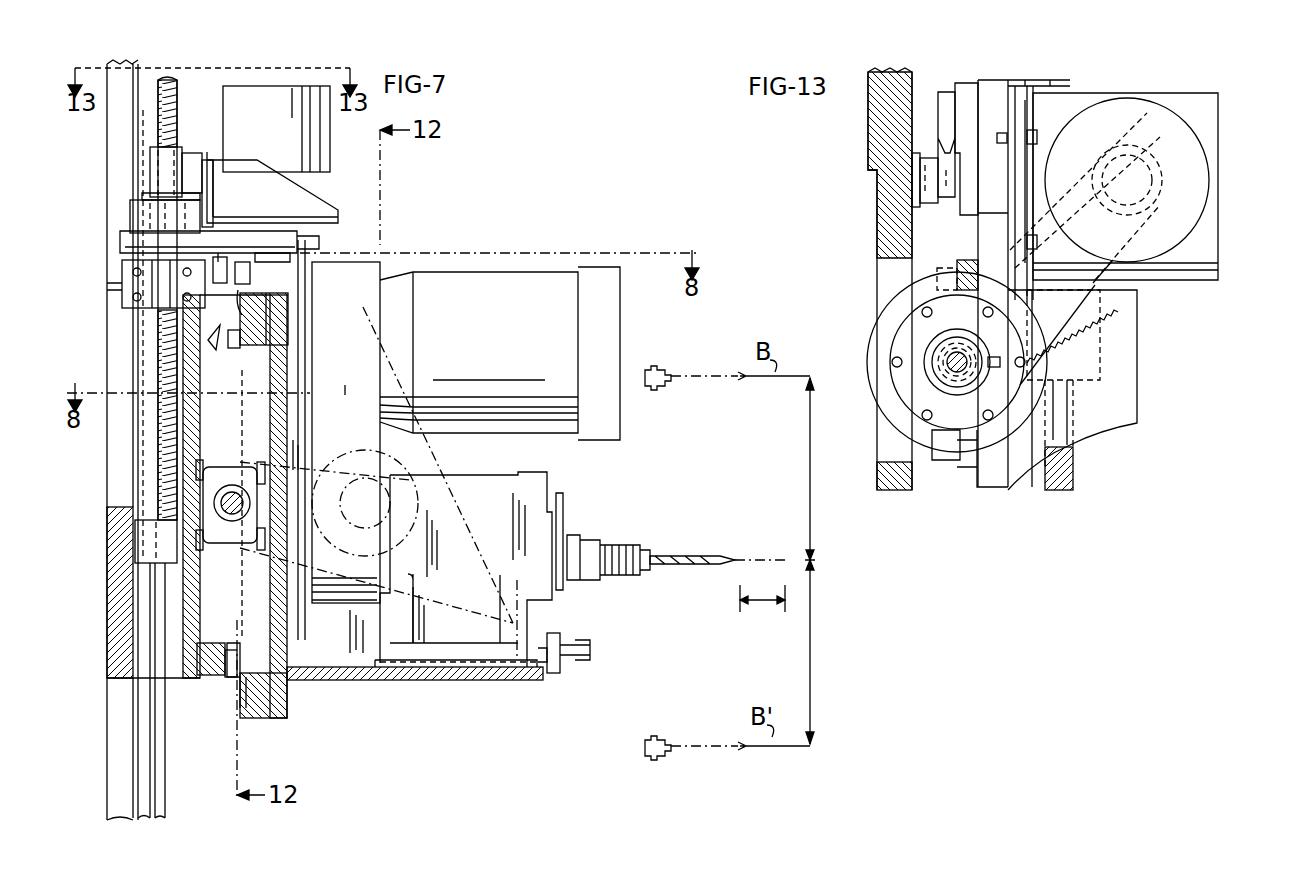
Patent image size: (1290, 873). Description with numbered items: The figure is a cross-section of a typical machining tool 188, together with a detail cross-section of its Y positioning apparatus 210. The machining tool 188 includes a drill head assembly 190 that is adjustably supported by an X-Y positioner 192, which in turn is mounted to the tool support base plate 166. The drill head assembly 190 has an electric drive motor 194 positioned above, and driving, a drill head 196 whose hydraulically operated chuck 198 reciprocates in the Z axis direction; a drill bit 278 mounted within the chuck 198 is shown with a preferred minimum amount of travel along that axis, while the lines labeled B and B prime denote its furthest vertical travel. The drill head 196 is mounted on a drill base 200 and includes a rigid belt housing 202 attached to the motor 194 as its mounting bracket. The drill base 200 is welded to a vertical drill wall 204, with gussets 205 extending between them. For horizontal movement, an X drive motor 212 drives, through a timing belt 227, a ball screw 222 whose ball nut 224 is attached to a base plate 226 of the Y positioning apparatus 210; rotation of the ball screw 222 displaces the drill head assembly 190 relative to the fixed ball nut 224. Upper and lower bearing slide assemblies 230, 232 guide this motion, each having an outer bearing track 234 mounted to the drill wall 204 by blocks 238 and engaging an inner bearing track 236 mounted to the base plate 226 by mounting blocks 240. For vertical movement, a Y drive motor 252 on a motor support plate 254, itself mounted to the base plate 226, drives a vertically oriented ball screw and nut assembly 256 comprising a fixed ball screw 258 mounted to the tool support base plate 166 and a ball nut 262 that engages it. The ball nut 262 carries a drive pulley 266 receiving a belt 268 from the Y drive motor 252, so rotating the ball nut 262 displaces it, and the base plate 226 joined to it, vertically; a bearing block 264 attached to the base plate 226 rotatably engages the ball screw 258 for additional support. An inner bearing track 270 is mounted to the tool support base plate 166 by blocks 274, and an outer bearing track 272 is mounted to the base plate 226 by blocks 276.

In FIG. 7, the tool support base plate 166 is at (122, 150).
In FIG. 13, the tool support base plate 166 is at (878, 198).
In FIG. 7, the machining tool 188 is at (490, 155).
In FIG. 7, the drill head assembly 190 is at (645, 333).
In FIG. 7, the X-Y positioner 192 is at (186, 680).
In FIG. 7, the electric drive motor 194 is at (517, 331).
In FIG. 7, the drill head 196 is at (487, 557).
In FIG. 7, the hydraulically operated chuck 198 is at (591, 542).
In FIG. 7, the drill base 200 is at (508, 674).
In FIG. 7, the belt housing 202 is at (361, 388).
In FIG. 7, the drill wall 204 is at (273, 709).
In FIG. 7, the gussets 205 is at (450, 469).
In FIG. 7, the Y positioning apparatus 210 is at (182, 106).
In FIG. 7, the X drive motor 212 is at (348, 401).
In FIG. 7, the ball screw 222 is at (232, 510).
In FIG. 13, the ball screw 222 is at (1075, 462).
In FIG. 7, the ball nut 224 is at (243, 455).
In FIG. 13, the ball nut 224 is at (1100, 340).
In FIG. 7, the base plate 226 is at (185, 358).
In FIG. 13, the base plate 226 is at (998, 86).
In FIG. 7, the timing belt 227 is at (360, 459).
In FIG. 7, the upper bearing slide assembly 230 is at (253, 275).
In FIG. 7, the lower bearing slide assembly 232 is at (250, 660).
In FIG. 7, the outer bearing track 234 is at (234, 307).
In FIG. 13, the outer bearing track 234 is at (1062, 415).
In FIG. 7, the inner bearing track 236 is at (235, 342).
In FIG. 7, the blocks 238 is at (275, 297).
In FIG. 7, the mounting blocks 240 is at (275, 404).
In FIG. 7, the Y drive motor 252 is at (275, 134).
In FIG. 13, the Y drive motor 252 is at (1200, 180).
In FIG. 7, the motor support plate 254 is at (340, 216).
In FIG. 13, the motor support plate 254 is at (1205, 116).
In FIG. 13, the ball screw and nut assembly 256 is at (860, 323).
In FIG. 7, the ball screw 258 is at (148, 136).
In FIG. 13, the ball screw 258 is at (945, 360).
In FIG. 7, the ball nut 262 is at (122, 208).
In FIG. 7, the bearing block 264 is at (122, 273).
In FIG. 7, the drive pulley 266 is at (137, 229).
In FIG. 13, the drive pulley 266 is at (910, 359).
In FIG. 7, the belt 268 is at (225, 236).
In FIG. 13, the belt 268 is at (1077, 316).
In FIG. 13, the inner bearing track 270 is at (942, 200).
In FIG. 7, the outer bearing track 272 is at (143, 181).
In FIG. 13, the outer bearing track 272 is at (944, 93).
In FIG. 13, the blocks 274 is at (913, 170).
In FIG. 13, the blocks 276 is at (961, 83).
In FIG. 7, the drill bit 278 is at (694, 556).